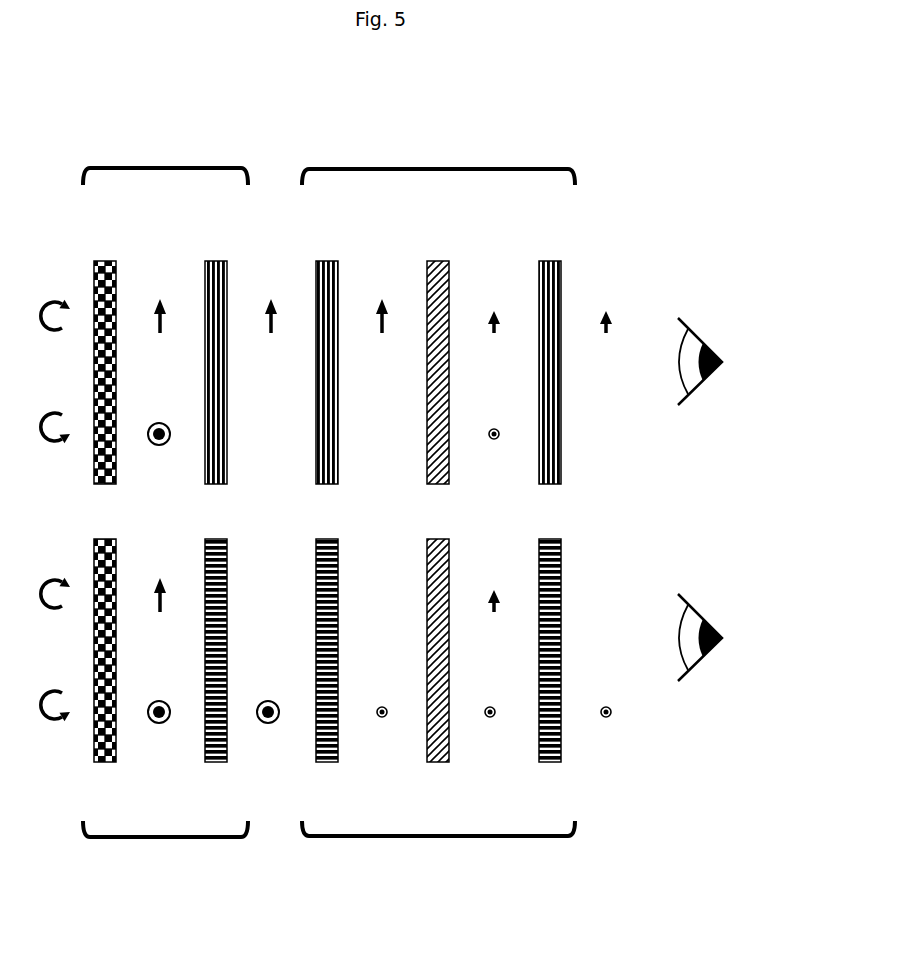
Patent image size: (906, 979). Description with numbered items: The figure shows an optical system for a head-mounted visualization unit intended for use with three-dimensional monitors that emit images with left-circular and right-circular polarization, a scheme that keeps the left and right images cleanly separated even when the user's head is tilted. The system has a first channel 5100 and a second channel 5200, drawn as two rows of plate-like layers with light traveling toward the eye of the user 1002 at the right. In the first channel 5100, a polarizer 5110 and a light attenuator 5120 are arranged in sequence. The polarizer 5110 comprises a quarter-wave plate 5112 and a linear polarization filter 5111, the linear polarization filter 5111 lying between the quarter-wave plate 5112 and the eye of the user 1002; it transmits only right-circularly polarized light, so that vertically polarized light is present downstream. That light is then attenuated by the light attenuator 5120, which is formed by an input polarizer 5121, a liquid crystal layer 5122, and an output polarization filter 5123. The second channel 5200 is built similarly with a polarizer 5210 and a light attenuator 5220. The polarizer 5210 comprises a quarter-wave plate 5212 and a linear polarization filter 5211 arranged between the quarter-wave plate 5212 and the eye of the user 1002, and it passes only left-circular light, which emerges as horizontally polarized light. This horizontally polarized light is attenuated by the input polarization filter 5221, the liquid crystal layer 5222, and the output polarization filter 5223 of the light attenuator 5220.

The eye of the user 1002 is at (722, 362).
The first channel 5100 is at (329, 268).
The polarizer 5110 is at (165, 168).
The linear polarization filter 5111 is at (216, 261).
The λ/4 plate 5112 is at (105, 261).
The light attenuator 5120 is at (438, 169).
The input polarizer 5121 is at (327, 261).
The liquid crystal layer 5122 is at (438, 261).
The output polarization filter 5123 is at (550, 261).
The second channel 5200 is at (329, 751).
The polarizer 5210 is at (165, 837).
The linear polarization filter 5211 is at (216, 762).
The λ/4 plate 5212 is at (105, 762).
The light attenuator 5220 is at (438, 836).
The input polarization filter 5221 is at (327, 762).
The liquid crystal layer 5222 is at (438, 762).
The output polarization filter 5223 is at (550, 762).